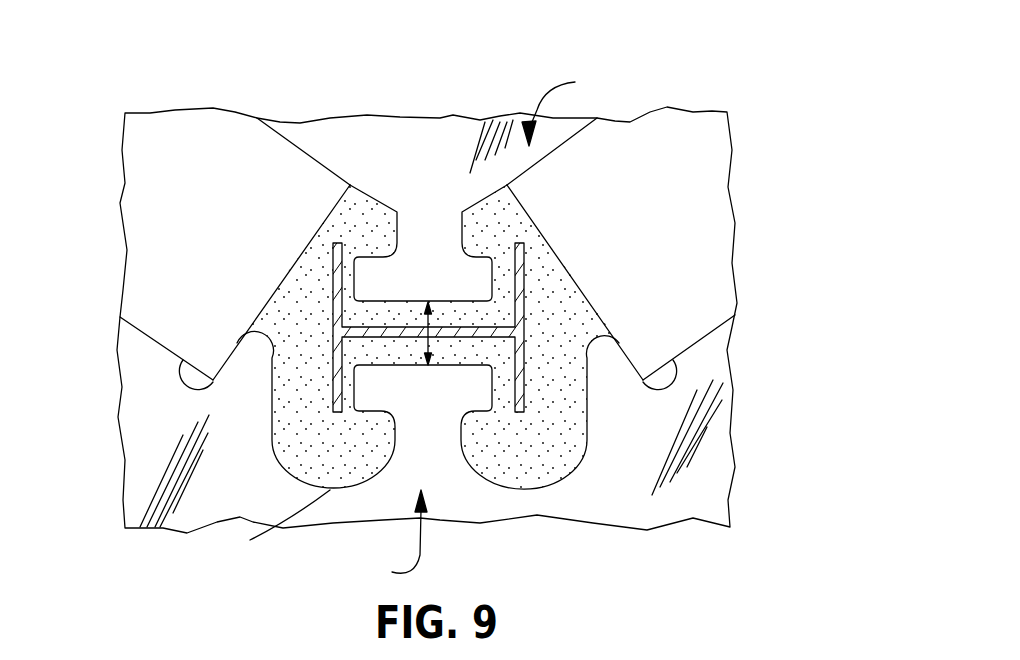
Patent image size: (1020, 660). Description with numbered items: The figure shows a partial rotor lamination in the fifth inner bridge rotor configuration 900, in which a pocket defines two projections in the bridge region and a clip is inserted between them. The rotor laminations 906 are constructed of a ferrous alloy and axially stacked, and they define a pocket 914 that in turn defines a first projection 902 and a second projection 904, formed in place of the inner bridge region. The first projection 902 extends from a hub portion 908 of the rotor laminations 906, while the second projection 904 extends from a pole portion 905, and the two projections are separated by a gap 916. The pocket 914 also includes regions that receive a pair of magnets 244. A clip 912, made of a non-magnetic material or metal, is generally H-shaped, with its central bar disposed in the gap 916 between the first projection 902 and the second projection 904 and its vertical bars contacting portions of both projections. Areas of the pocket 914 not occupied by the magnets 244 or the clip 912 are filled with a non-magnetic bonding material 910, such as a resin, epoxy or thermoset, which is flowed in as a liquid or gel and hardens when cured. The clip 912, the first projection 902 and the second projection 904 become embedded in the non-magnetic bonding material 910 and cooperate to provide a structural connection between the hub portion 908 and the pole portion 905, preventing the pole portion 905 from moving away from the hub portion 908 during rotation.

The fifth inner bridge rotor configuration 900 is at (745, 84).
The pole portion 905 is at (569, 107).
The second projection 904 is at (415, 283).
The magnets 244 is at (180, 222).
The clip 912 is at (273, 313).
The gap 916 is at (428, 345).
The non-magnetic bonding material 910 is at (540, 433).
The first projection 902 is at (445, 387).
The pocket 914 is at (277, 539).
The hub portion 908 is at (387, 539).
The rotor laminations 906 is at (713, 485).